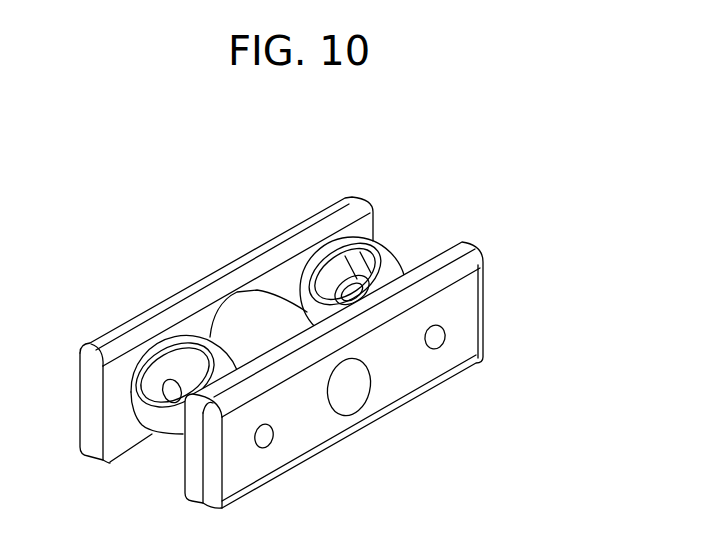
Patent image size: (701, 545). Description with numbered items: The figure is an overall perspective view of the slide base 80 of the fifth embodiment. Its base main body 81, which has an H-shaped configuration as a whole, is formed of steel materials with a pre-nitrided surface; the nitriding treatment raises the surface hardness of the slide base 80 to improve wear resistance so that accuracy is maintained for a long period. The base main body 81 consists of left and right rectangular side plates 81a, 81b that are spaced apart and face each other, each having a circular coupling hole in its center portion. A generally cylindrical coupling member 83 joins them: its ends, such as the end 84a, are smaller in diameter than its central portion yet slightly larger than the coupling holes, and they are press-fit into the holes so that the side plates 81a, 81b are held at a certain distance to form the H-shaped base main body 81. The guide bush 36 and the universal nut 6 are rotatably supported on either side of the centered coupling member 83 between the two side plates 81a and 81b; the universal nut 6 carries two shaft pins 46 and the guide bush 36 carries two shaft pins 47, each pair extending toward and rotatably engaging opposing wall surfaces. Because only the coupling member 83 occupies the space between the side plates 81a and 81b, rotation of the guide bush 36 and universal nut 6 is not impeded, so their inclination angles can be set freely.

The slide base 80 is at (373, 192).
The base main body 81 is at (235, 258).
The left side plate 81a is at (128, 337).
The right side plate 81b is at (463, 330).
The coupling member 83 is at (237, 325).
The universal nut 6 is at (385, 255).
The guide bush 36 is at (166, 447).
The end of coupling member 84a is at (348, 397).
The shaft pins 46 is at (265, 447).
The shaft pins 47 is at (437, 348).